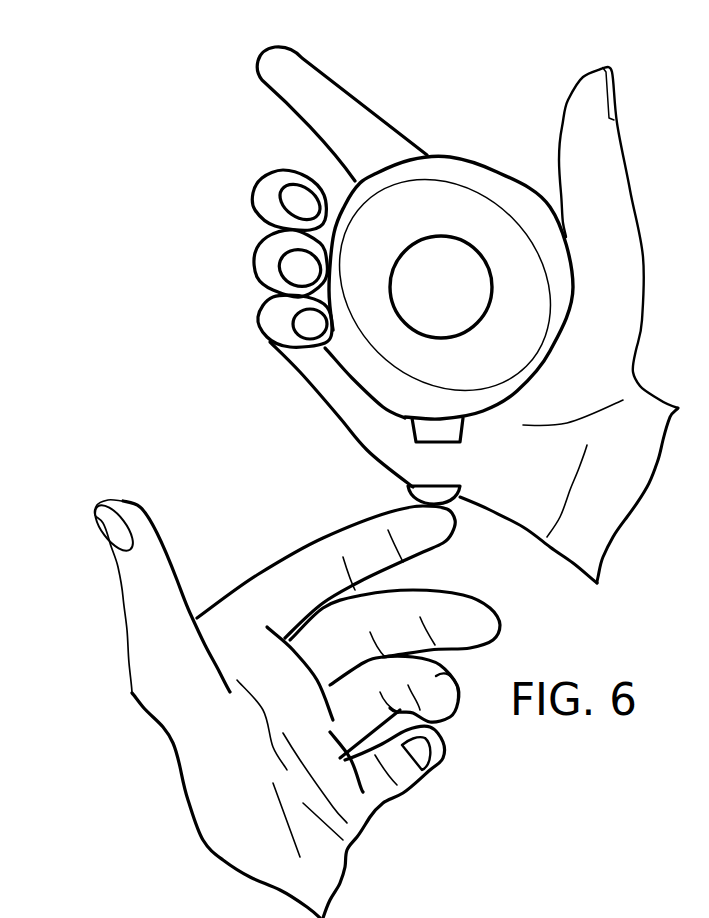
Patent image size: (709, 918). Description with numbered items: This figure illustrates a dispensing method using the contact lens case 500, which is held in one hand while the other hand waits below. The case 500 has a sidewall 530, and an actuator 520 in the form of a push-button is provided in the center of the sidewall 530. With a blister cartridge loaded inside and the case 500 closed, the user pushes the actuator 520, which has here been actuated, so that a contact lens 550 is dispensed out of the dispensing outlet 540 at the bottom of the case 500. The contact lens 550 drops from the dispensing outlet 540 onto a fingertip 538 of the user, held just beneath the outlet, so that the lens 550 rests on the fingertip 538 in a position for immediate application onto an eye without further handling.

The case 500 is at (468, 157).
The actuator 520 is at (450, 263).
The sidewall 530 is at (352, 203).
The dispensing outlet 540 is at (422, 430).
The contact lens 550 is at (412, 494).
The fingertip 538 is at (428, 535).